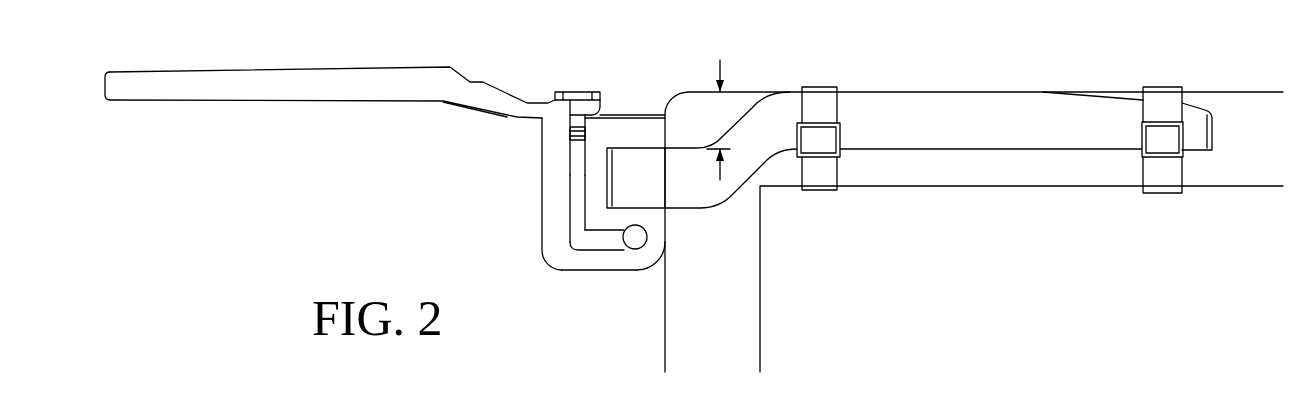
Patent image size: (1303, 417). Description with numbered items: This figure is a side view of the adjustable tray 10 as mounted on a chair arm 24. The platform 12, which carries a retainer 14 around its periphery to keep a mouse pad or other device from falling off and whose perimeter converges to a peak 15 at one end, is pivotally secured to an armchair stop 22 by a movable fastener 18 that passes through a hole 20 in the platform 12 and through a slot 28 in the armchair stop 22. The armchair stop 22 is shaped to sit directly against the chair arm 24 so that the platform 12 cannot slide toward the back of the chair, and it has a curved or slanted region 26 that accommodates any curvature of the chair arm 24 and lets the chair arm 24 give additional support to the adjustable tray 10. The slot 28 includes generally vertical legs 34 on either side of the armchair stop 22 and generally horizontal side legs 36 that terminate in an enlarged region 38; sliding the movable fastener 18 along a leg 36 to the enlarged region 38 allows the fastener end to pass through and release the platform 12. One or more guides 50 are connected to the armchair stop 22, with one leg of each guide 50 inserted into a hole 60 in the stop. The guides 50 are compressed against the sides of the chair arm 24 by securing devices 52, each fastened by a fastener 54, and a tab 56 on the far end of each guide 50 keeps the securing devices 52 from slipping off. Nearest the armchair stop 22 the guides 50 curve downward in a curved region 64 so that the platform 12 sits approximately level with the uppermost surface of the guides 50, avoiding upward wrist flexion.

The adjustable tray 10 is at (650, 45).
The platform 12 is at (298, 102).
The retainer 14 is at (235, 78).
The peak 15 is at (103, 97).
The movable fastener 18 is at (577, 92).
The hole 20 is at (570, 108).
The armchair stop 22 is at (617, 118).
The chair arm 24 is at (905, 188).
The curved or slanted region 26 is at (655, 258).
The slot 28 is at (568, 230).
The vertical legs 34 is at (576, 195).
The horizontal side legs 36 is at (600, 240).
The enlarged region 38 is at (633, 243).
The guide 50 is at (912, 100).
The securing device 52 is at (827, 108).
The fastener 54 is at (803, 133).
The tab 56 is at (1213, 135).
The hole 60 is at (607, 160).
The curved region 64 is at (720, 107).